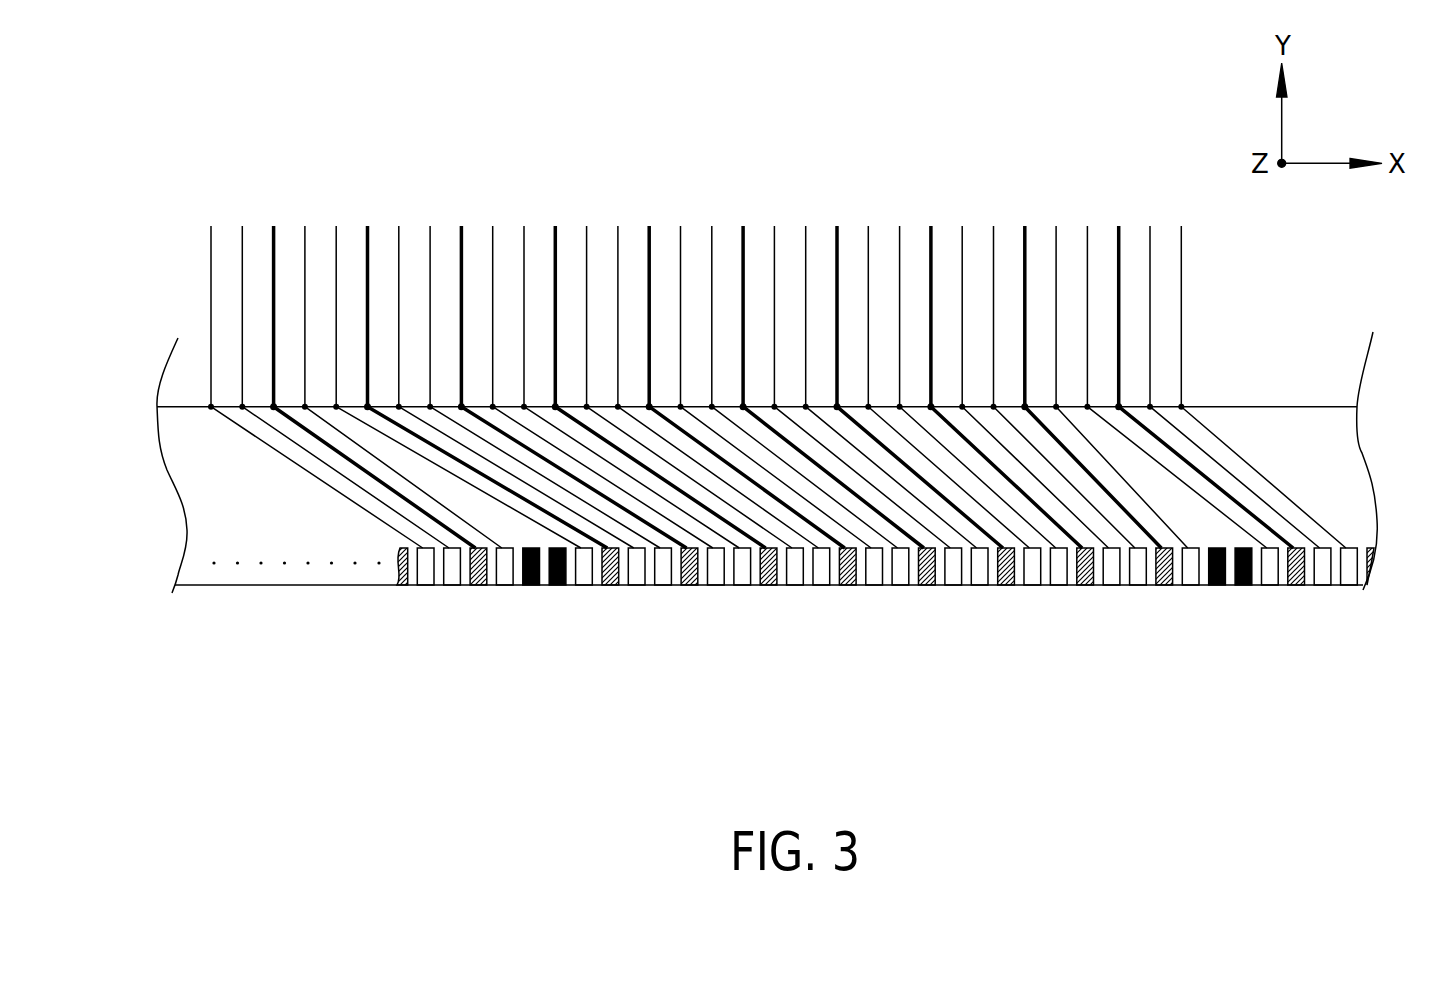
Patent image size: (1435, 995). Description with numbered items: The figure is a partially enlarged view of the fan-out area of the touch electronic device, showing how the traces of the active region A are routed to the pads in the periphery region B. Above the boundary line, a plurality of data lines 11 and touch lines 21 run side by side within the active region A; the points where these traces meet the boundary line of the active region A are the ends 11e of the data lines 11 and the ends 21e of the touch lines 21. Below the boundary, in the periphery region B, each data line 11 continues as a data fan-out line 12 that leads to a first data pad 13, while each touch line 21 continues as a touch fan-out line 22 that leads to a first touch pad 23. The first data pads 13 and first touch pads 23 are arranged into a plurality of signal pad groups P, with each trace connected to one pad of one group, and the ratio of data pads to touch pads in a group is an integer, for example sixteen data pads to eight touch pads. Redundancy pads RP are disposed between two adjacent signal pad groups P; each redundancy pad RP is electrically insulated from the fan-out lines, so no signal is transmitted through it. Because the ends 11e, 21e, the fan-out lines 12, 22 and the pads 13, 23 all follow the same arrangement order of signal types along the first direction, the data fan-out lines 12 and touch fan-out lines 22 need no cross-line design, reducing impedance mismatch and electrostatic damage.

The data line 11 is at (212, 249).
The touch line 21 is at (273, 249).
The end of data line 11e is at (211, 407).
The end of touch line 21e is at (273, 407).
The data fan-out line 12 is at (303, 468).
The touch fan-out line 22 is at (377, 478).
The first data pad 13 is at (1355, 637).
The first touch pad 23 is at (1303, 637).
The redundancy pad RP is at (517, 590).
The active region A is at (1312, 370).
The periphery region B is at (1358, 468).
The signal pad group P is at (508, 675).